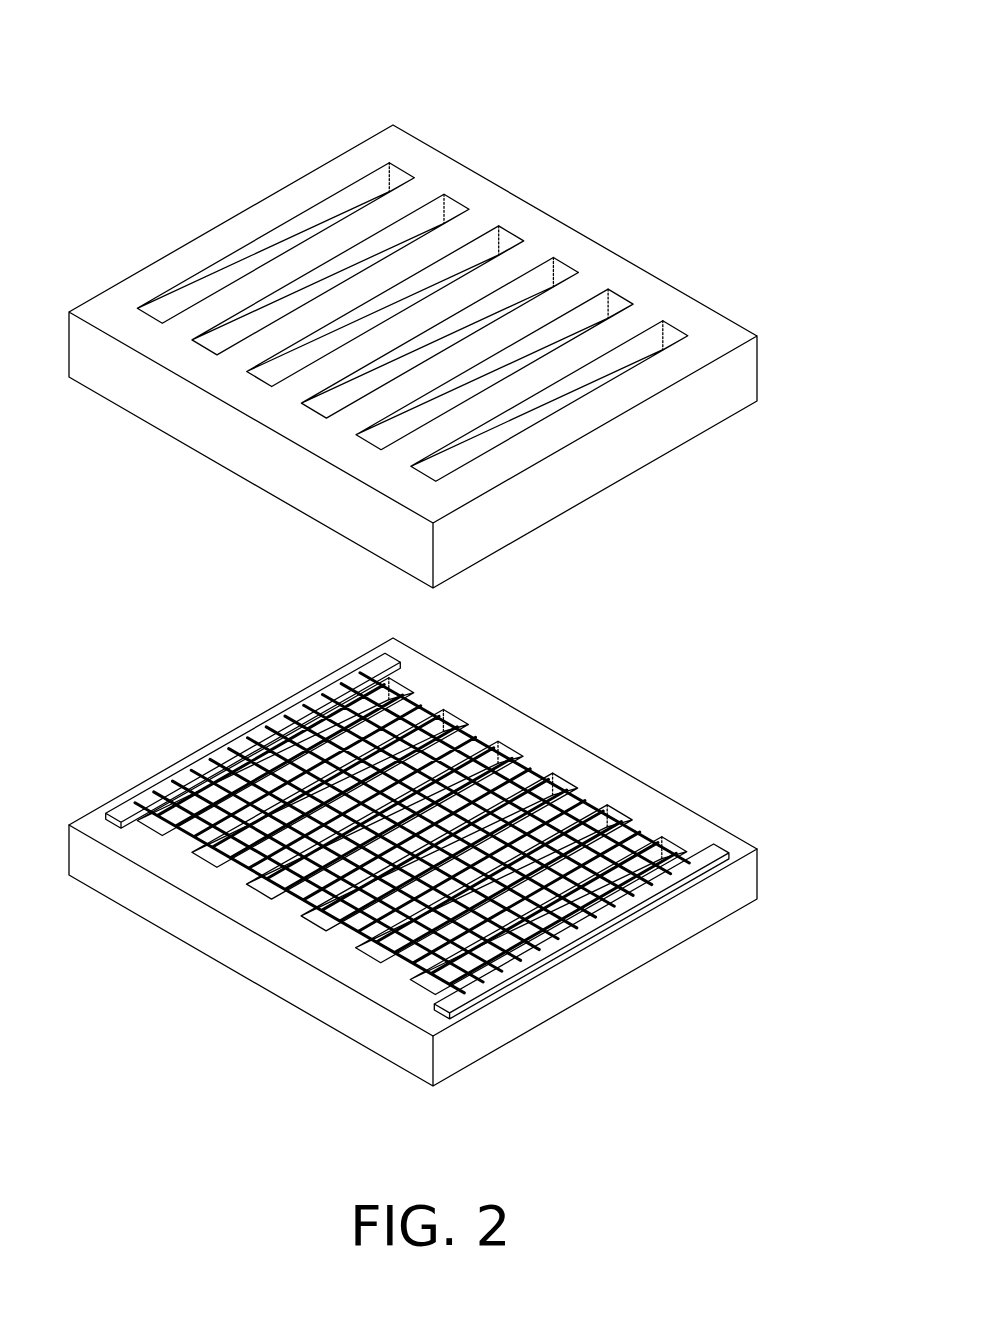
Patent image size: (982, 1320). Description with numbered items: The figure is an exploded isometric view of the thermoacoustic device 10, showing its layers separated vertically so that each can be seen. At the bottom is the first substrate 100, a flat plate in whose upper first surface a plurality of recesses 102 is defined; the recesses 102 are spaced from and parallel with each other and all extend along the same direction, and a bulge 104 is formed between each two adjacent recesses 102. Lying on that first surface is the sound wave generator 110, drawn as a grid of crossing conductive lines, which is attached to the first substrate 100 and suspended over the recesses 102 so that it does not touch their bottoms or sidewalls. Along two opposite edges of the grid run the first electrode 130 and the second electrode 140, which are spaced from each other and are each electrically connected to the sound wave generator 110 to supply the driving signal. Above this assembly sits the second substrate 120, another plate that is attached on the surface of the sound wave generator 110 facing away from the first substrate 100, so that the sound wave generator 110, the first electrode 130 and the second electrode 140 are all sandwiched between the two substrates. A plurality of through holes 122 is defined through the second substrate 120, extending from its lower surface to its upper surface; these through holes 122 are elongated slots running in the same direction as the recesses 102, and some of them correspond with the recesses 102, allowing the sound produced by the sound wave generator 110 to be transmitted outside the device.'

The thermoacoustic device 10 is at (295, 79).
The first substrate 100 is at (472, 1048).
The recesses 102 is at (527, 930).
The bulge 104 is at (633, 840).
The sound wave generator 110 is at (418, 707).
The second substrate 120 is at (658, 434).
The through holes 122 is at (598, 310).
The first electrode 130 is at (380, 660).
The second electrode 140 is at (709, 853).